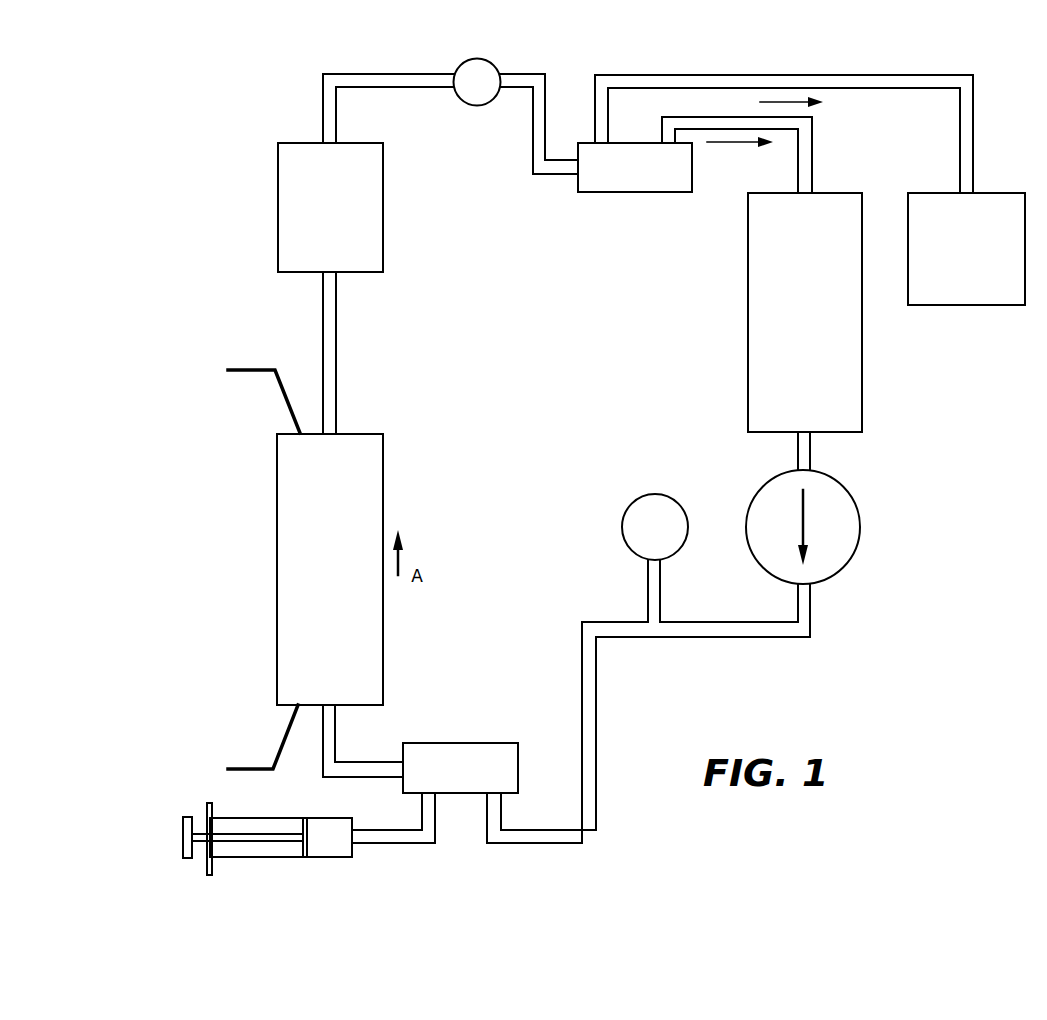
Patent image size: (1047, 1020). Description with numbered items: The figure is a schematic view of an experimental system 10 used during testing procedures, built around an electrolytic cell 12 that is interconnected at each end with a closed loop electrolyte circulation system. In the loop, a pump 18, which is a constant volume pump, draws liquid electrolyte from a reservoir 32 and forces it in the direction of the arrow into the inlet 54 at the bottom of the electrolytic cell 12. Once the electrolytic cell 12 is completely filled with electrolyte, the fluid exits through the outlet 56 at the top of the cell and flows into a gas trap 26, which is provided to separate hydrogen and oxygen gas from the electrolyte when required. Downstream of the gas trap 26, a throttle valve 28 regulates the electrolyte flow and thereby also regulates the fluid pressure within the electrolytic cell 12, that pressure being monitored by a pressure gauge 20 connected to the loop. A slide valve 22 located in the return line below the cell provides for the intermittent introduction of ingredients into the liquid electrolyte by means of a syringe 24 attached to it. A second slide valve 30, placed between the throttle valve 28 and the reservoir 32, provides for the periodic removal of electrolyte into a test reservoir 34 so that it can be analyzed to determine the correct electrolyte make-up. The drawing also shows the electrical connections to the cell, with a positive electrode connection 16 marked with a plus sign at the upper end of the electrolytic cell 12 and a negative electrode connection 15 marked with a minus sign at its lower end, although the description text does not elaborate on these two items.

The system 10 is at (238, 148).
The electrolytic cell 12 is at (383, 496).
The negative electrode 15 is at (260, 767).
The positive electrode 16 is at (252, 368).
The pump 18 is at (848, 488).
The pressure gauge 20 is at (647, 496).
The slide valve 22 is at (447, 743).
The syringe 24 is at (280, 858).
The gas trap 26 is at (360, 143).
The throttle valve 28 is at (477, 106).
The second slide valve 30 is at (627, 193).
The reservoir 32 is at (836, 193).
The test reservoir 34 is at (993, 193).
The inlet 54 is at (328, 706).
The outlet 56 is at (328, 433).